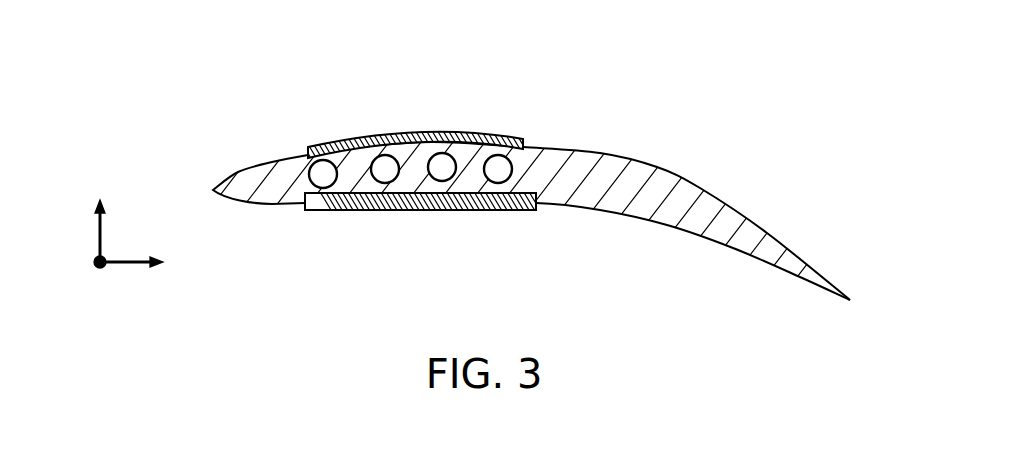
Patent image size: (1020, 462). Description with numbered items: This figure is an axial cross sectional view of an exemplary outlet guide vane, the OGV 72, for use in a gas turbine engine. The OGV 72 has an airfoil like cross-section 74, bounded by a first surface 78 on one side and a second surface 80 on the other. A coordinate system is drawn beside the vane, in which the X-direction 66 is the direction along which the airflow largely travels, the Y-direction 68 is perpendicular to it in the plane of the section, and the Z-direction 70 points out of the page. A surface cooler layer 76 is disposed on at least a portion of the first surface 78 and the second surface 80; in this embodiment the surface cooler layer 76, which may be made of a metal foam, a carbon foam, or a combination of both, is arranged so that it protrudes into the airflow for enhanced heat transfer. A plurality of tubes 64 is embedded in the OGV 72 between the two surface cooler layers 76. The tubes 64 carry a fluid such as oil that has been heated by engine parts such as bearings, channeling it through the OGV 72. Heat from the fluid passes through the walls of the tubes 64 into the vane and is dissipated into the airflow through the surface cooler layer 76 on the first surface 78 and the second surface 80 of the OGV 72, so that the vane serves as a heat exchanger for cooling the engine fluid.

The tubes 64 is at (441, 168).
The X-direction 66 is at (153, 272).
The Y-direction 68 is at (107, 200).
The Z-direction 70 is at (97, 272).
The OGV 72 is at (505, 165).
The airfoil like cross-section 74 is at (687, 193).
The surface cooler layer 76 is at (340, 142).
The first surface 78 is at (617, 157).
The second surface 80 is at (688, 228).